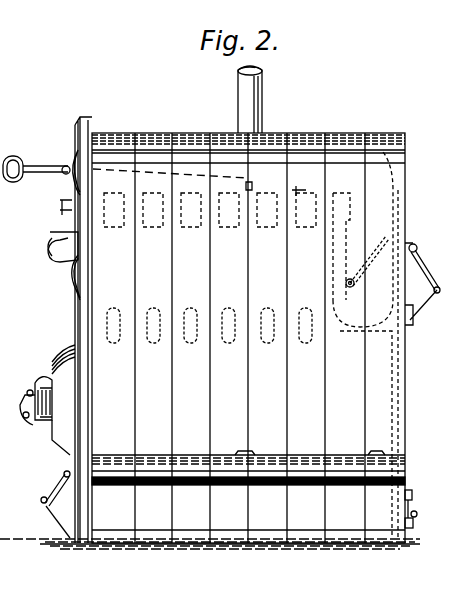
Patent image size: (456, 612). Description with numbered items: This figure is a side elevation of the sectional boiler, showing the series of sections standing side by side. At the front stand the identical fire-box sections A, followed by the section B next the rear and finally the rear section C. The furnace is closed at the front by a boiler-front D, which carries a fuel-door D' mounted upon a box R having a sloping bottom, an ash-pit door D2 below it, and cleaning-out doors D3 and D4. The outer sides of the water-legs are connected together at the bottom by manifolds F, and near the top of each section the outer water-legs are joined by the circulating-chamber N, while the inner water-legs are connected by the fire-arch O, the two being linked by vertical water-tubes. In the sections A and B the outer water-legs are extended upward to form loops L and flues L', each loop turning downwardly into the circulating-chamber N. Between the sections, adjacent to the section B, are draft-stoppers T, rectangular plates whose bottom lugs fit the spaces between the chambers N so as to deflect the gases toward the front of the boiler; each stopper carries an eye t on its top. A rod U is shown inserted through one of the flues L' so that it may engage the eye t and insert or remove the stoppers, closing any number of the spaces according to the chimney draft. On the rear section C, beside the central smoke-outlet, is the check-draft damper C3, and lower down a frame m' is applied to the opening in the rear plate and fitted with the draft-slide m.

The rod U is at (33, 164).
The boiler-front D is at (85, 340).
The cleaning-out door D4 is at (56, 205).
The cleaning-out door D3 is at (76, 296).
The box R is at (58, 356).
The fuel-door D' is at (44, 411).
The ash-pit door D2 is at (56, 492).
The flue L' is at (113, 128).
The loop L is at (270, 129).
The circulating-chamber N is at (191, 228).
The fire-arch O is at (191, 343).
The eye t is at (254, 186).
The draft-stopper T is at (298, 190).
The fire-box section A is at (208, 309).
The section next the rear B is at (345, 309).
The rear section C is at (367, 316).
The check-draft damper C3 is at (432, 265).
The frame m' is at (425, 489).
The draft-slide m is at (424, 514).
The manifold F is at (270, 480).